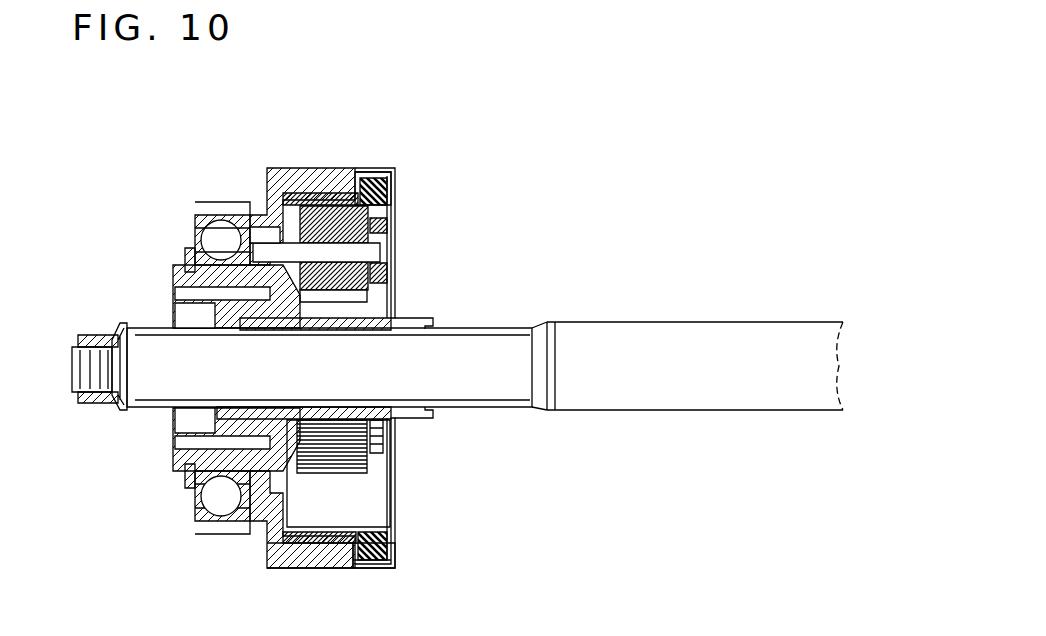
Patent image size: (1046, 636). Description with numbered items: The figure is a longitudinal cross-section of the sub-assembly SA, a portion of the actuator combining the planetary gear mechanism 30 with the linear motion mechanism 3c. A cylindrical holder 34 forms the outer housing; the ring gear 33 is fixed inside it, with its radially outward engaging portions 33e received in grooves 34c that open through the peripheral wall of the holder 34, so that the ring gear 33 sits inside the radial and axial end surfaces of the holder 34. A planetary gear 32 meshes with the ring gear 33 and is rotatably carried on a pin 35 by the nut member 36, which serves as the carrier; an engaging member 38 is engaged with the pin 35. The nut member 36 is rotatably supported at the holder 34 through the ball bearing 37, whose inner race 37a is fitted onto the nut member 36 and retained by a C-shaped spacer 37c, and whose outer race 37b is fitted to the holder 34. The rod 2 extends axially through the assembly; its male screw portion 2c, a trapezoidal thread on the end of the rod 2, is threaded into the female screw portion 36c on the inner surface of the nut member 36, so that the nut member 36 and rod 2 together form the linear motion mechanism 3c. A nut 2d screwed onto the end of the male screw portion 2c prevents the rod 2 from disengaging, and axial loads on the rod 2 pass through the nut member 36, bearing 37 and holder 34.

The rod 2 is at (720, 345).
The male screw portion 2c is at (140, 408).
The nut 2d is at (94, 405).
The linear motion mechanism 3c is at (416, 453).
The planetary gear mechanism 30 is at (326, 570).
The planetary gear 32 is at (335, 230).
The ring gear 33 is at (318, 210).
The engaging portion 33e is at (396, 184).
The holder 34 is at (280, 196).
The groove 34c is at (374, 178).
The pin 35 is at (253, 212).
The nut member 36 is at (196, 263).
The female screw portion 36c is at (208, 328).
The bearing 37 is at (191, 212).
The inner race 37a is at (192, 486).
The outer race 37b is at (220, 518).
The spacer 37c is at (188, 276).
The engaging member 38 is at (386, 226).
The sub-assembly SA is at (506, 302).